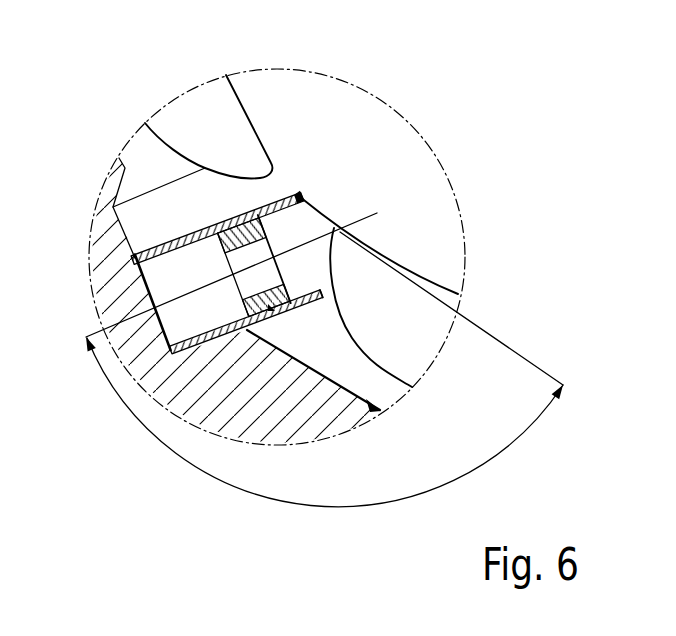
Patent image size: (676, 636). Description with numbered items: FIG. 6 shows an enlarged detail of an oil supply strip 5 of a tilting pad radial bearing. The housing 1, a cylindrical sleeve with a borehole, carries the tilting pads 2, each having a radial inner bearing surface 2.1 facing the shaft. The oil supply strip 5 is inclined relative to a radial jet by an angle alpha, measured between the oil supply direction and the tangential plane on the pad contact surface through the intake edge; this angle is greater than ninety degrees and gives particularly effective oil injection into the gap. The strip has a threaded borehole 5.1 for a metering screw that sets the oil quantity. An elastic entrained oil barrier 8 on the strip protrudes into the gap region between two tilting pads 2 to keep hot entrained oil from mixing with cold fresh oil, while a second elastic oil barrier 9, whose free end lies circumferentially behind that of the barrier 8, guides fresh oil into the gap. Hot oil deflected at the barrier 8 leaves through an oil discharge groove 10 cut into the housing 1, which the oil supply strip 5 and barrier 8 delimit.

The housing 1 is at (100, 280).
The tilting pad 2 is at (190, 105).
The radial inner bearing surface 2.1 is at (440, 282).
The oil supply strip 5 is at (172, 248).
The threaded borehole 5.1 is at (251, 246).
The entrained oil barrier 8 is at (283, 186).
The second oil barrier 9 is at (308, 303).
The oil discharge groove 10 is at (158, 208).